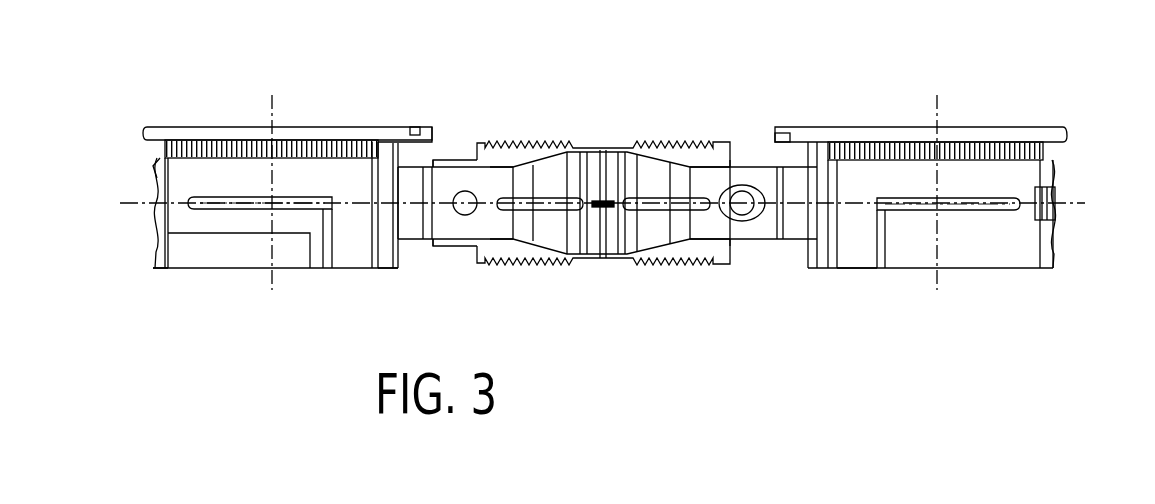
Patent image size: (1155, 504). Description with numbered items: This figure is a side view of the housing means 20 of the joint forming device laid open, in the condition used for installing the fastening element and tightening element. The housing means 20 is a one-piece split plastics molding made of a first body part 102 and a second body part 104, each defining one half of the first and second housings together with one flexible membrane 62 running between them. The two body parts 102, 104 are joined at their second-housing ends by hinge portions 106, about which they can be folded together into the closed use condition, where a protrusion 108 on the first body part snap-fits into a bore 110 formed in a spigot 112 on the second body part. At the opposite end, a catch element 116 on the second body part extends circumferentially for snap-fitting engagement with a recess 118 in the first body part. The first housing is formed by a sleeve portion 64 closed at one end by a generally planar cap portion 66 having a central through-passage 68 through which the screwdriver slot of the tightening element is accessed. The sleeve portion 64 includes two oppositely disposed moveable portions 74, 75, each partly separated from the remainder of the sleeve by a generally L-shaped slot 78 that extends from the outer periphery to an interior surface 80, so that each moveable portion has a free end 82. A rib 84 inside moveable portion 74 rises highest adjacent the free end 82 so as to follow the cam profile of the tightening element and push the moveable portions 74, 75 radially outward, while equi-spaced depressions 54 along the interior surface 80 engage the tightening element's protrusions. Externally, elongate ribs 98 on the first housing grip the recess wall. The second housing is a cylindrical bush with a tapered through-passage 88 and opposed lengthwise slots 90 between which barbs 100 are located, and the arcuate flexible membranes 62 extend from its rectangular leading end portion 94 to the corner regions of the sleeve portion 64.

The housing means 20 is at (573, 103).
The depressions 54 is at (324, 128).
The flexible membranes 62 is at (410, 225).
The sleeve portion 64 is at (393, 268).
The cap portion 66 is at (418, 128).
The through-passage 68 is at (235, 128).
The moveable portion 74 is at (244, 218).
The moveable portion 75 is at (993, 250).
The L-shaped slot 78 is at (330, 217).
The interior surface 80 is at (187, 178).
The free end 82 is at (887, 250).
The rib 84 is at (198, 257).
The through-passage 88 is at (493, 178).
The slots 90 is at (652, 195).
The leading end portion 94 is at (456, 160).
The elongate ribs 98 is at (150, 262).
The barbs 100 is at (550, 148).
The first body part 102 is at (193, 125).
The second body part 104 is at (1002, 125).
The hinge portions 106 is at (600, 240).
The protrusion 108 is at (467, 215).
The bore 110 is at (742, 183).
The spigot 112 is at (740, 218).
The catch element 116 is at (1055, 197).
The recess 118 is at (160, 215).